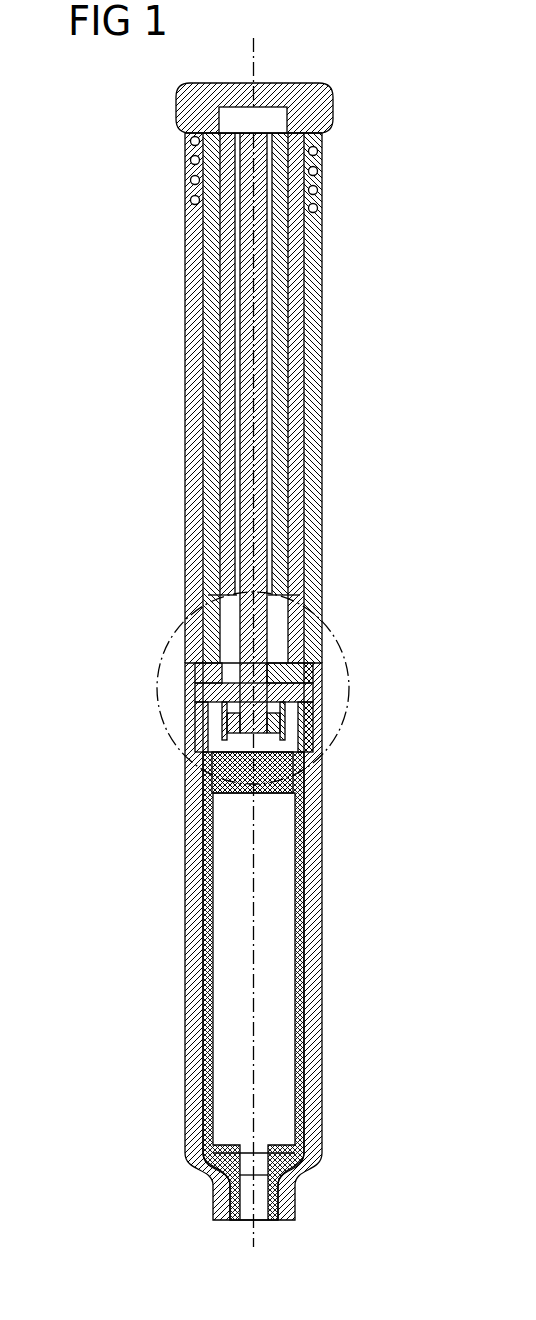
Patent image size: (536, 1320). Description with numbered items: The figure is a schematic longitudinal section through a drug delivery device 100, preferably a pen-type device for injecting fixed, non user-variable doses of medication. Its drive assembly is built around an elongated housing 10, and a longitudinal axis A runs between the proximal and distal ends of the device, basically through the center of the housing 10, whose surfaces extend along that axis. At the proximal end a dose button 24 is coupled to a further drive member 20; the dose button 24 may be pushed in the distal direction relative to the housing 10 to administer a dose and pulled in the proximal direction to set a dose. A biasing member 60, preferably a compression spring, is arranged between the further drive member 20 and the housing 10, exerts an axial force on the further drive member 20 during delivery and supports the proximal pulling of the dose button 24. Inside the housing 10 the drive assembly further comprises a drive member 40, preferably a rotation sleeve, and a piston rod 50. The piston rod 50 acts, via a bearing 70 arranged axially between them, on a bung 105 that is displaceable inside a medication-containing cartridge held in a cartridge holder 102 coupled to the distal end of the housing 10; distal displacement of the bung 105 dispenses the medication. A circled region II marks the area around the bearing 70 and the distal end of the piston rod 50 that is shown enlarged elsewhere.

The longitudinal axis A is at (255, 44).
The drug delivery device 100 is at (142, 337).
The housing 10 is at (308, 355).
The further drive member 20 is at (323, 428).
The dose button 24 is at (326, 106).
The drive member 40 is at (305, 480).
The piston rod 50 is at (305, 545).
The biasing member 60 is at (322, 170).
The bearing 70 is at (232, 796).
The cartridge holder 102 is at (330, 890).
The bung 105 is at (325, 781).
The detail region II is at (350, 688).